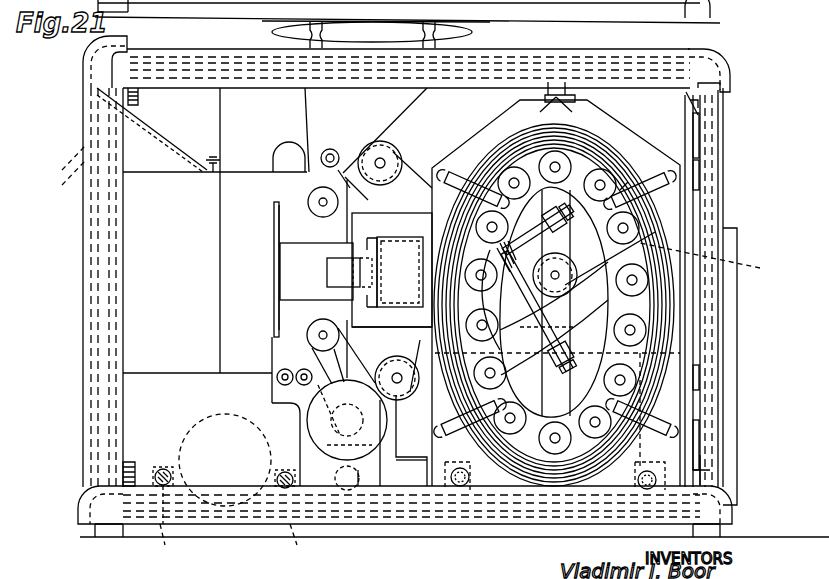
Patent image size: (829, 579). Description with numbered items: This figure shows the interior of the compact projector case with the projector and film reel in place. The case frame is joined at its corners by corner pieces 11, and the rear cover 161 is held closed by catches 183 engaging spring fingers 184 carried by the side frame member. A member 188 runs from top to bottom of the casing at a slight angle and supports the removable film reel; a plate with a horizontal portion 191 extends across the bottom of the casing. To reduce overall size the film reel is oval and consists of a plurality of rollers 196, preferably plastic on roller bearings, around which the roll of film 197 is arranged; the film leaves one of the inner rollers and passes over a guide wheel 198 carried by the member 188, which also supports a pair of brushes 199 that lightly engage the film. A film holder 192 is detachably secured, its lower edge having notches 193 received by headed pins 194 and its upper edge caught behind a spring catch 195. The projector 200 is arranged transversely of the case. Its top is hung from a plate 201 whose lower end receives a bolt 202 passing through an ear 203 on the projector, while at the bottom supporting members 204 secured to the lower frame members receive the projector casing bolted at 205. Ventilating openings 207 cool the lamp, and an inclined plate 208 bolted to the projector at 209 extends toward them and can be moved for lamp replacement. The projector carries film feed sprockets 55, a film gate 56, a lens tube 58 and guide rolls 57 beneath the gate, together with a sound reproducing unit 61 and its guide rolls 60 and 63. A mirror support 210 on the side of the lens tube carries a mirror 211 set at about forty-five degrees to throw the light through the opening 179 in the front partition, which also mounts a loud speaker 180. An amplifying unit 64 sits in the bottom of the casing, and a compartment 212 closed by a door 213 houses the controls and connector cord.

The corner piece 11 is at (715, 12).
The film feed sprockets 55 is at (392, 150).
The film gate 56 is at (276, 275).
The guide rolls 57 is at (282, 370).
The lens tube 58 is at (278, 252).
The guide roll 60 is at (347, 435).
The sound reproducing unit 61 is at (365, 475).
The guide roll 63 is at (316, 328).
The amplifying unit 64 is at (412, 480).
The rear cover 161 is at (706, 190).
The opening 179 is at (405, 330).
The loud speaker 180 is at (588, 168).
The catches 183 is at (693, 92).
The spring fingers 184 is at (150, 85).
The member 188 is at (528, 110).
The horizontal portion 191 is at (520, 3).
The film holder 192 is at (700, 168).
The notches 193 is at (638, 482).
The headed pins 194 is at (458, 468).
The spring catch 195 is at (572, 95).
The rollers 196 is at (605, 175).
The roll of film 197 is at (628, 182).
The guide wheel 198 is at (566, 284).
The brushes 199 is at (520, 300).
The projector 200 is at (243, 172).
The plate 201 is at (390, 112).
The bolt 202 is at (333, 150).
The ear 203 is at (370, 200).
The supporting members 204 is at (244, 545).
The bolts 205 is at (165, 466).
The openings 207 is at (61, 170).
The inclined plate 208 is at (160, 138).
The bolt 209 is at (214, 158).
The mirror support 210 is at (340, 273).
The mirror 211 is at (422, 240).
The compartment 212 is at (610, 356).
The door 213 is at (737, 338).